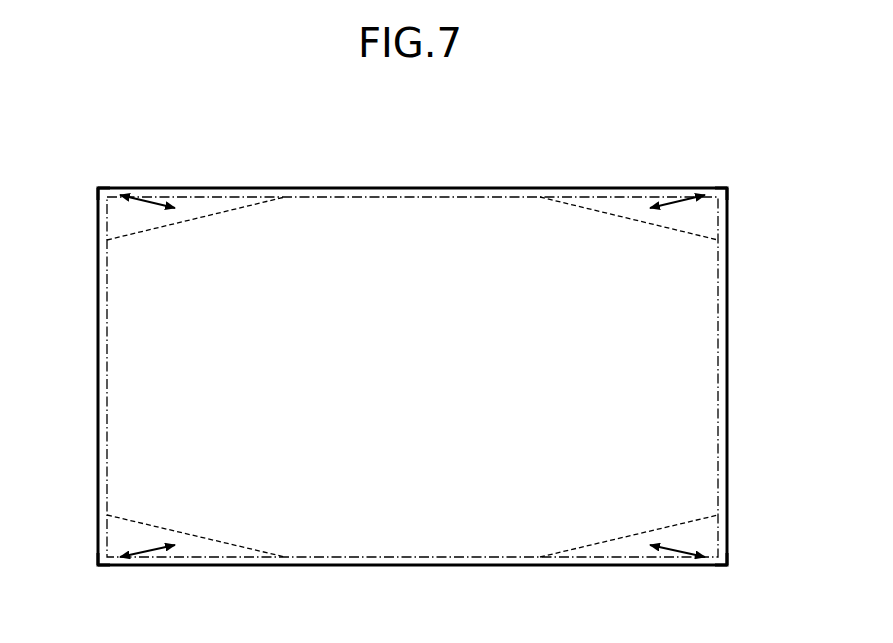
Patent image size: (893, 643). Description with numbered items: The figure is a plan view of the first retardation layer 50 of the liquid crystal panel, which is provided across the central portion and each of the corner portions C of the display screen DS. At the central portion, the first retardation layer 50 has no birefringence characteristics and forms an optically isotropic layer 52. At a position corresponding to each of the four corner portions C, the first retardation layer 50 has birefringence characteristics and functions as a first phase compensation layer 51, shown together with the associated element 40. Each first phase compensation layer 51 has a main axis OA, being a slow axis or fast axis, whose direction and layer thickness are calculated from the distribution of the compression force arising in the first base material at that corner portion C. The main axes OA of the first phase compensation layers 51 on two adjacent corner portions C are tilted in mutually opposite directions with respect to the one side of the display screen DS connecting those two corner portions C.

The first retardation layer 50 is at (420, 364).
The isotropic layer 52 is at (704, 341).
The display screen DS is at (372, 226).
The first phase compensation layer 51 is at (412, 387).
The optical unit 40 is at (194, 210).
The main axis OA is at (148, 203).
The corner portion C is at (96, 189).